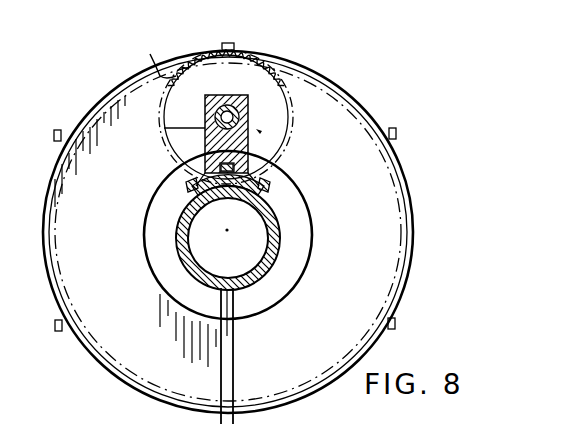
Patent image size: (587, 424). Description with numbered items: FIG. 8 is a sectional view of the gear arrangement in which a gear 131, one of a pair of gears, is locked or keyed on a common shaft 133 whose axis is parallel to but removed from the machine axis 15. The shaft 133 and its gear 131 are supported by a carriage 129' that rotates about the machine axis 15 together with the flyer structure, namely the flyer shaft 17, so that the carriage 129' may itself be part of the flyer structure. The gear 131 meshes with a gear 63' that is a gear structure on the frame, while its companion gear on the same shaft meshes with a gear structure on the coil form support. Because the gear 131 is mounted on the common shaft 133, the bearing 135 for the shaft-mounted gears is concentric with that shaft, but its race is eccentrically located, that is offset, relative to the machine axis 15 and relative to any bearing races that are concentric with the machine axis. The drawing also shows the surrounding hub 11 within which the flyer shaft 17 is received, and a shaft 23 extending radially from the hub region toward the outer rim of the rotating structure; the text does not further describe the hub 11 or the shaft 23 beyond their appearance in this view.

The hub 11 is at (144, 211).
The machine axis 15 is at (229, 230).
The flyer shaft 17 is at (198, 262).
The shaft 23 is at (235, 362).
The gear 63' is at (149, 57).
The carriage 129' is at (296, 145).
The gear 131 is at (290, 118).
The shaft 133 is at (247, 93).
The bearing 135 is at (204, 129).